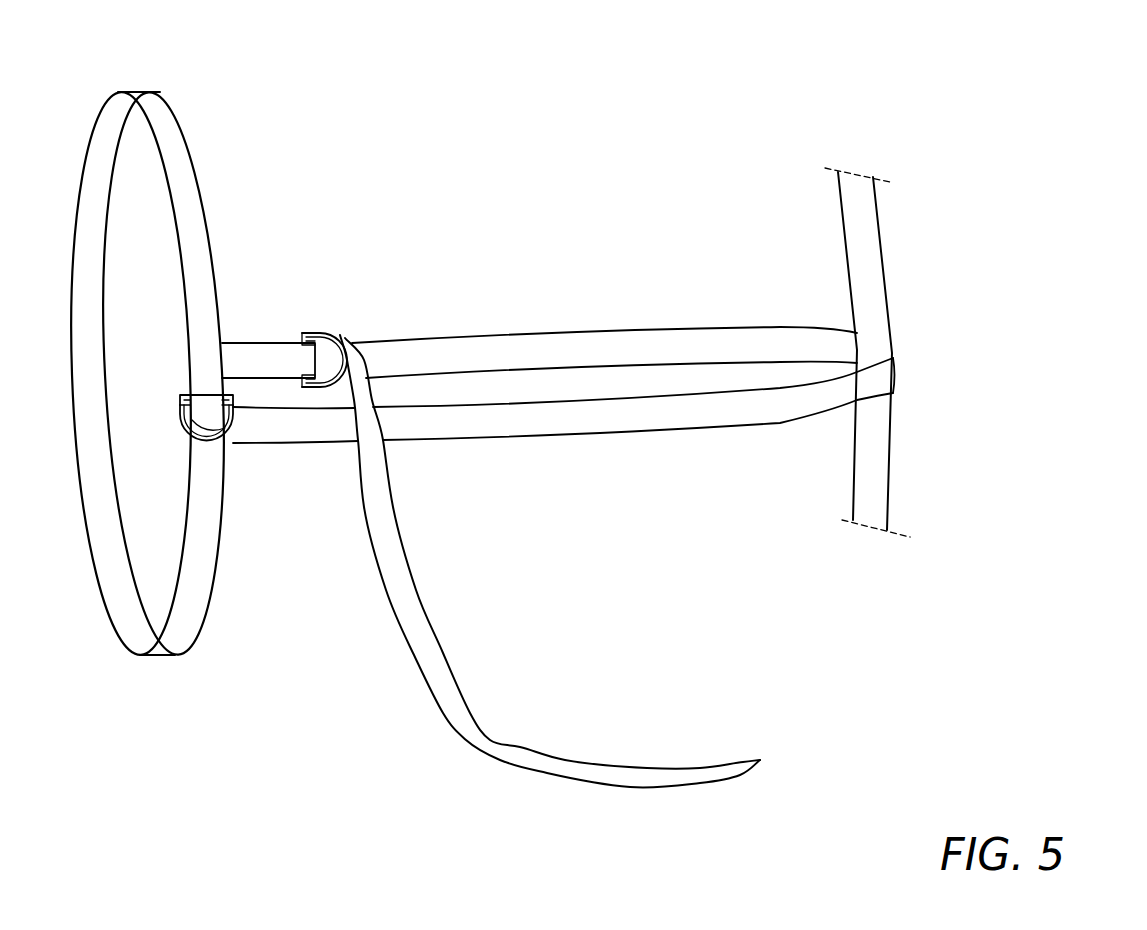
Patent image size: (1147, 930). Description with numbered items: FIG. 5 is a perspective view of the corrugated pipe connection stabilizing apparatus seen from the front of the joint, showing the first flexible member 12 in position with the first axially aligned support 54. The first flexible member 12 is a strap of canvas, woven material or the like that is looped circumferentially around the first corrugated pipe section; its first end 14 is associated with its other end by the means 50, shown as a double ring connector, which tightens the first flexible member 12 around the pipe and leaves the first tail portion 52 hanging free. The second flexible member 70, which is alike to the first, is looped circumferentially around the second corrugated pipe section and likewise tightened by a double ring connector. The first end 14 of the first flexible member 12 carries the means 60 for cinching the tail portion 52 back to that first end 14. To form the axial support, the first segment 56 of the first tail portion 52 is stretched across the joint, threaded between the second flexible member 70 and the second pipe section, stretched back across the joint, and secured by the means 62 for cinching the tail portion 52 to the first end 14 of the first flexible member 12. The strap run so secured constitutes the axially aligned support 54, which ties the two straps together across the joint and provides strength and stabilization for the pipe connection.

The first flexible member 12 is at (185, 335).
The first end 14 is at (202, 281).
The means for associating the first end with the second end 50 is at (195, 425).
The first tail portion 52 is at (540, 777).
The axially aligned support 54 is at (610, 420).
The first segment 56 is at (413, 428).
The means for cinching the tail portion 60 is at (400, 348).
The means for cinching the tail portion 62 is at (343, 343).
The second flexible member 70 is at (885, 248).